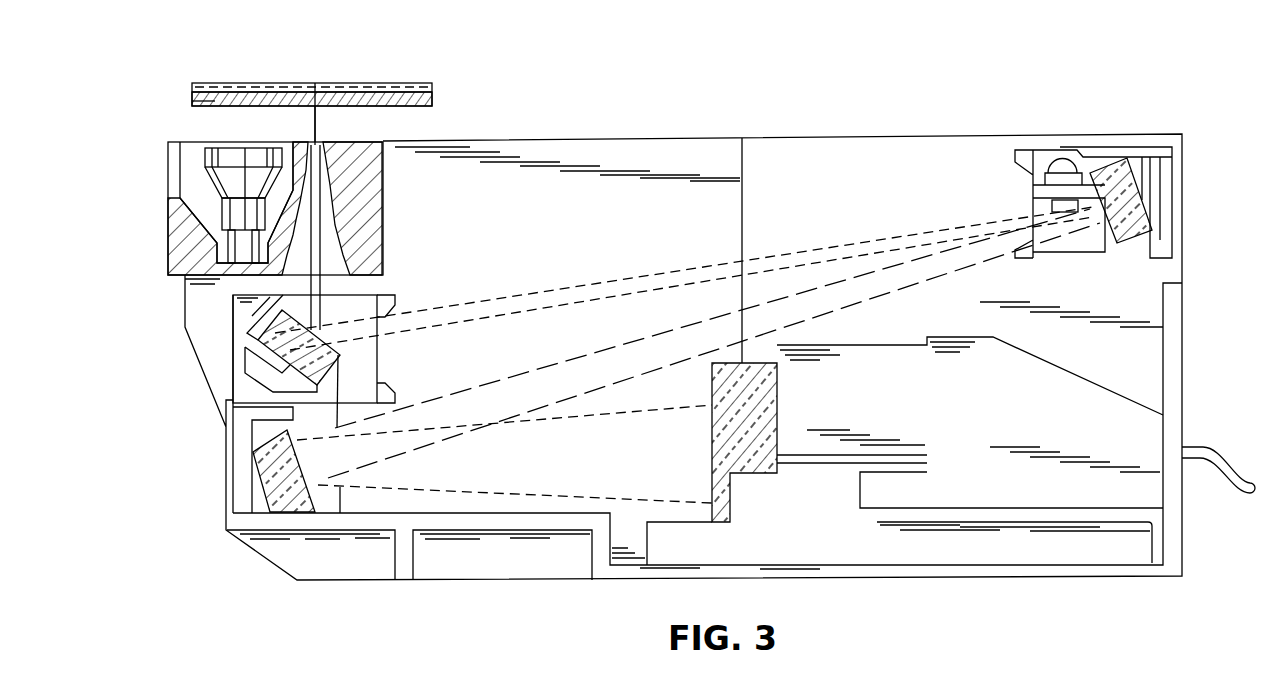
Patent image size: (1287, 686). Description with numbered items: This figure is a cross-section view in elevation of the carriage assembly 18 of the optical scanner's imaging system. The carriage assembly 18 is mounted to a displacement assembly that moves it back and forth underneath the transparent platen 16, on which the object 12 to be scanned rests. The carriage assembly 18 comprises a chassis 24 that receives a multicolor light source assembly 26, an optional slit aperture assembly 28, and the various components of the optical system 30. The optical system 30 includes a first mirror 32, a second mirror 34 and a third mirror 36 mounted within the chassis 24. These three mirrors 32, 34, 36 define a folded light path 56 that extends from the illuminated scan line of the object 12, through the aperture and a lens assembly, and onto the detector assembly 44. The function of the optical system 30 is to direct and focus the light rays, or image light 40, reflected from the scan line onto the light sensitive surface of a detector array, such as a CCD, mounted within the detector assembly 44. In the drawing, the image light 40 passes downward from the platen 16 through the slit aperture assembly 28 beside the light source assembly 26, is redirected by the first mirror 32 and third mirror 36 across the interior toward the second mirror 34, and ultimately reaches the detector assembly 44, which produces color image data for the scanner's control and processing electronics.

The object 12 is at (238, 80).
The transparent platen 16 is at (215, 108).
The carriage assembly 18 is at (1184, 272).
The chassis 24 is at (227, 443).
The multicolor light source assembly 26 is at (205, 183).
The slit aperture assembly 28 is at (311, 143).
The optical system 30 is at (495, 249).
The first mirror 32 is at (342, 350).
The second mirror 34 is at (1148, 208).
The third mirror 36 is at (256, 480).
The image light 40 is at (325, 120).
The detector assembly 44 is at (1022, 412).
The folded light path 56 is at (321, 143).